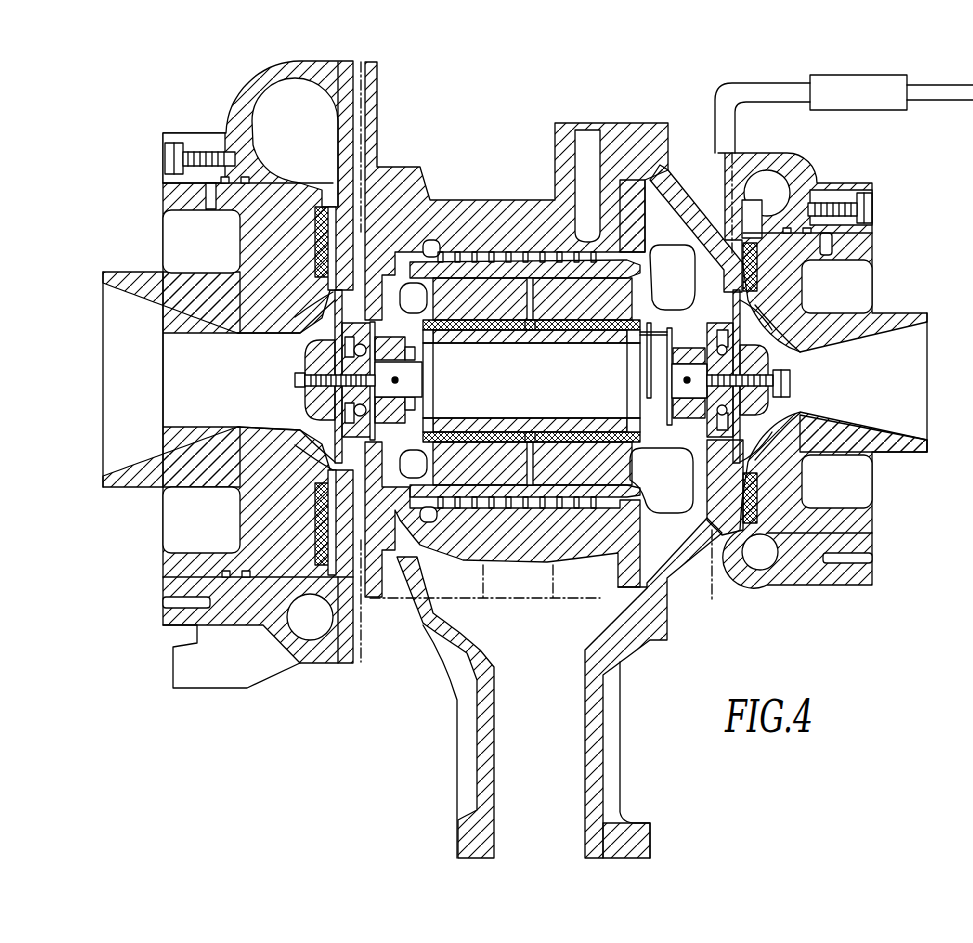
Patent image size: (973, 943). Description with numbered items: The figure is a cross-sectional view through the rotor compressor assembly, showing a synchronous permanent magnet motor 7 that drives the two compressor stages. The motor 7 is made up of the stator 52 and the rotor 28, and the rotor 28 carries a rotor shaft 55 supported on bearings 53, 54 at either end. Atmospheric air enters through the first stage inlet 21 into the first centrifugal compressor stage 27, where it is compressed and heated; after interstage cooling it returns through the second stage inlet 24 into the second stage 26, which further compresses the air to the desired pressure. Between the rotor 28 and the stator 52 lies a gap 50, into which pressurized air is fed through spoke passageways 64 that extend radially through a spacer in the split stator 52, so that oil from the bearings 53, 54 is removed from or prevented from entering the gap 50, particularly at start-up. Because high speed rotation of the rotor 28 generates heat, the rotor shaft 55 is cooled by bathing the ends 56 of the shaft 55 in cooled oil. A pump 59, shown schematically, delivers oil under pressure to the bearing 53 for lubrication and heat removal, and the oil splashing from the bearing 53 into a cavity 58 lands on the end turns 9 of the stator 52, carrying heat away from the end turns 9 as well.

The synchronous permanent magnet motor 7 is at (468, 174).
The end turns 9 is at (665, 262).
The first stage inlet 21 is at (140, 401).
The second stage inlet 24 is at (879, 401).
The second stage 26 is at (750, 410).
The first centrifugal compressor stage 27 is at (302, 348).
The rotor 28 is at (523, 397).
The gap 50 is at (636, 452).
The stator 52 is at (462, 303).
The bearing 53 is at (753, 357).
The bearing 54 is at (418, 398).
The rotor shaft 55 is at (688, 385).
The ends of the shaft 56 is at (673, 383).
The cavity 58 is at (712, 198).
The pump 59 is at (888, 108).
The spoke passageways 64 is at (532, 307).